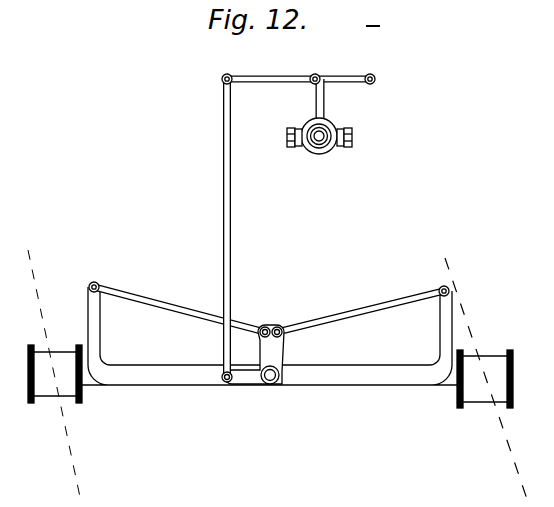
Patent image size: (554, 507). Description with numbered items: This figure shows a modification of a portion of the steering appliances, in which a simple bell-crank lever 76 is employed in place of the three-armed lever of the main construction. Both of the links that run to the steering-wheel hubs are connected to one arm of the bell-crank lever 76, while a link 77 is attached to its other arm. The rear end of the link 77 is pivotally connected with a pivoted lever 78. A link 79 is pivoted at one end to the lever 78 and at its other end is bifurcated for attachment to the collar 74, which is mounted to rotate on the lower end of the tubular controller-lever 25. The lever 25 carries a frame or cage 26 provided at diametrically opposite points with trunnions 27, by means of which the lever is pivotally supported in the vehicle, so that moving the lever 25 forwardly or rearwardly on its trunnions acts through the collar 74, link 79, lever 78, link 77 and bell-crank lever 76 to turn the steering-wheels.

The tubular lever 25 is at (318, 152).
The frame or cage 26 is at (340, 127).
The trunnions 27 is at (287, 137).
The collar 74 is at (334, 151).
The bell-crank lever 76 is at (284, 352).
The link 77 is at (240, 230).
The pivoted lever 78 is at (298, 69).
The link 79 is at (330, 98).